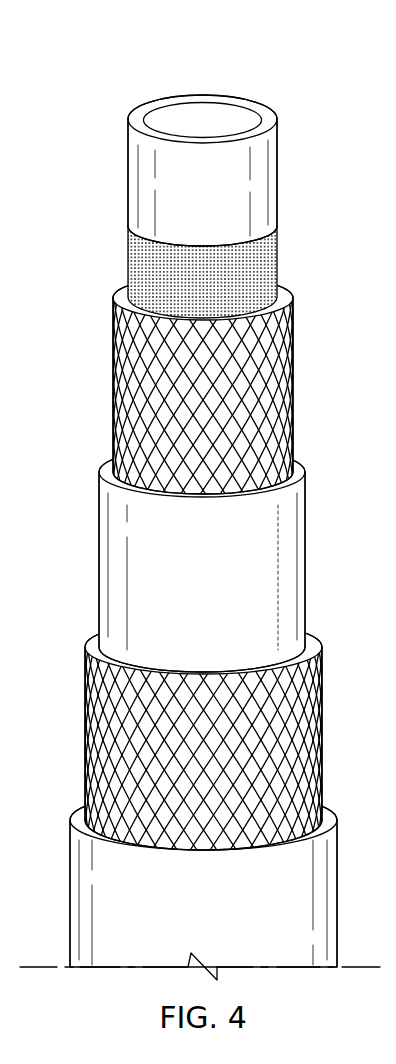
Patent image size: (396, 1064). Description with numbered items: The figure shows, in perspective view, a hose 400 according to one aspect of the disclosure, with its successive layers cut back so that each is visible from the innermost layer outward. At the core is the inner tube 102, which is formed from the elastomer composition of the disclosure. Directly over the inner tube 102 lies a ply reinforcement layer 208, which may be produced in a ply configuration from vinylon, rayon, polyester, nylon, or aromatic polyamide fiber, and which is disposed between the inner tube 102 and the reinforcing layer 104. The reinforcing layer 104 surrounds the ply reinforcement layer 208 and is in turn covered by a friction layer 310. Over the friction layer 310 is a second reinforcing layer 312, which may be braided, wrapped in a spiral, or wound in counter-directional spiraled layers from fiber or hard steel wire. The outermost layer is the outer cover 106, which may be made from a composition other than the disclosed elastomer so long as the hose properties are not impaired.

The hose 400 is at (92, 65).
The inner tube 102 is at (142, 169).
The ply reinforcement layer 208 is at (136, 256).
The reinforcing layer 104 is at (118, 375).
The friction layer 310 is at (108, 551).
The second reinforcing layer 312 is at (88, 722).
The outer cover 106 is at (80, 890).